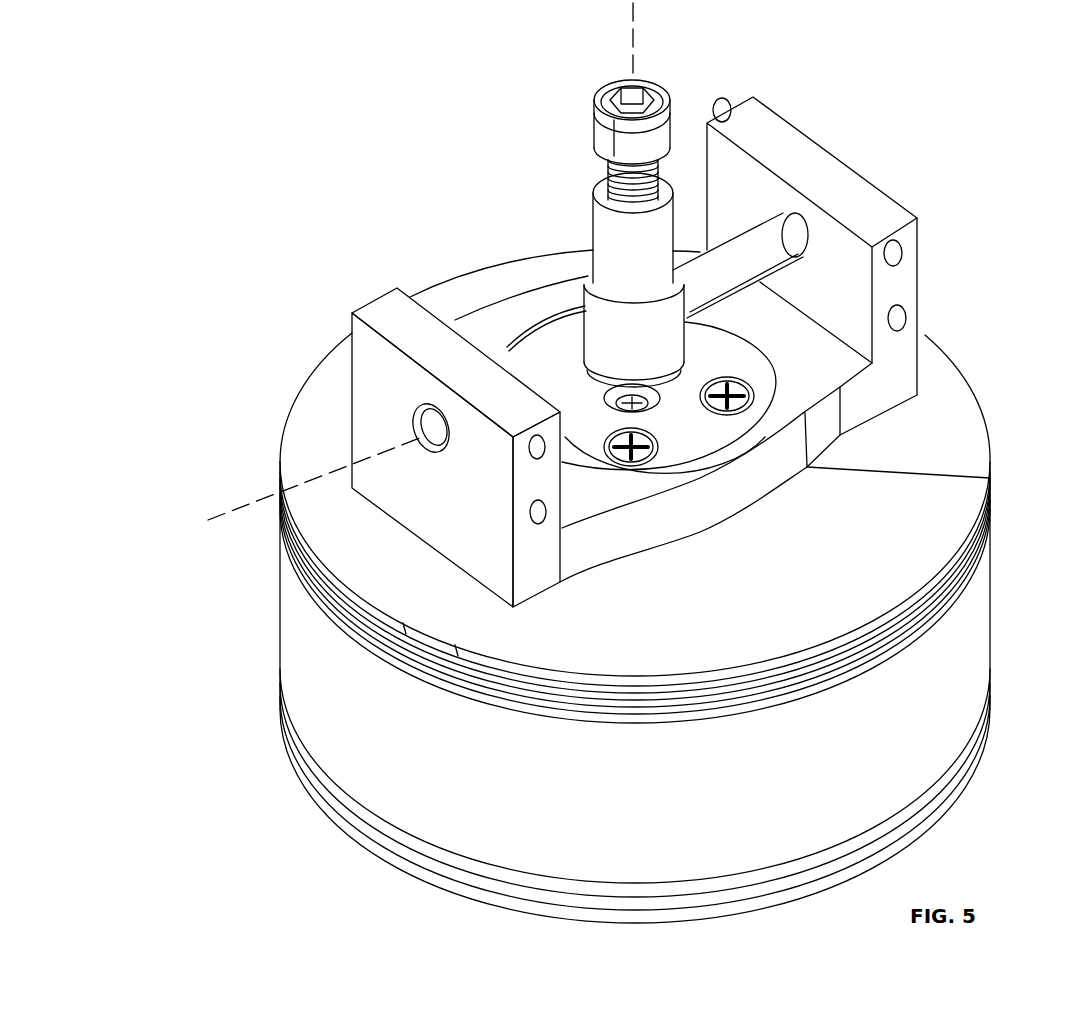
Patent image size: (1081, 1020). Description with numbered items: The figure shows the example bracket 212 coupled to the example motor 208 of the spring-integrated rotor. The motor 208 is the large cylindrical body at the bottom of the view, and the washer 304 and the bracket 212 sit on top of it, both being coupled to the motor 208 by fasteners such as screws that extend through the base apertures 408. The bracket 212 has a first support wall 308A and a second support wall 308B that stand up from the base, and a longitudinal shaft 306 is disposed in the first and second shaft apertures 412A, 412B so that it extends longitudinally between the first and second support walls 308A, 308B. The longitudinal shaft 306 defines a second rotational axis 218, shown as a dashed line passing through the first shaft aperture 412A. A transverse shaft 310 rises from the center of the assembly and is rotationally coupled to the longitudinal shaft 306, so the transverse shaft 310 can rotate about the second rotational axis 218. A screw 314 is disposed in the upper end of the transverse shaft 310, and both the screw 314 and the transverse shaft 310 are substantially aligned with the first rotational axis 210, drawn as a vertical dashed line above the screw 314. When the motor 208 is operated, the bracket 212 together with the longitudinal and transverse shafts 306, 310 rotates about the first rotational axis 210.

The motor 208 is at (282, 607).
The first rotational axis 210 is at (633, 20).
The bracket 212 is at (366, 300).
The second rotational axis 218 is at (215, 508).
The washer 304 is at (770, 478).
The longitudinal shaft 306 is at (537, 330).
The first support wall 308A is at (350, 428).
The second support wall 308B is at (920, 262).
The transverse shaft 310 is at (596, 248).
The screw 314 is at (595, 112).
The base apertures 408 is at (648, 464).
The first shaft aperture 412A is at (420, 415).
The second shaft aperture 412B is at (790, 212).